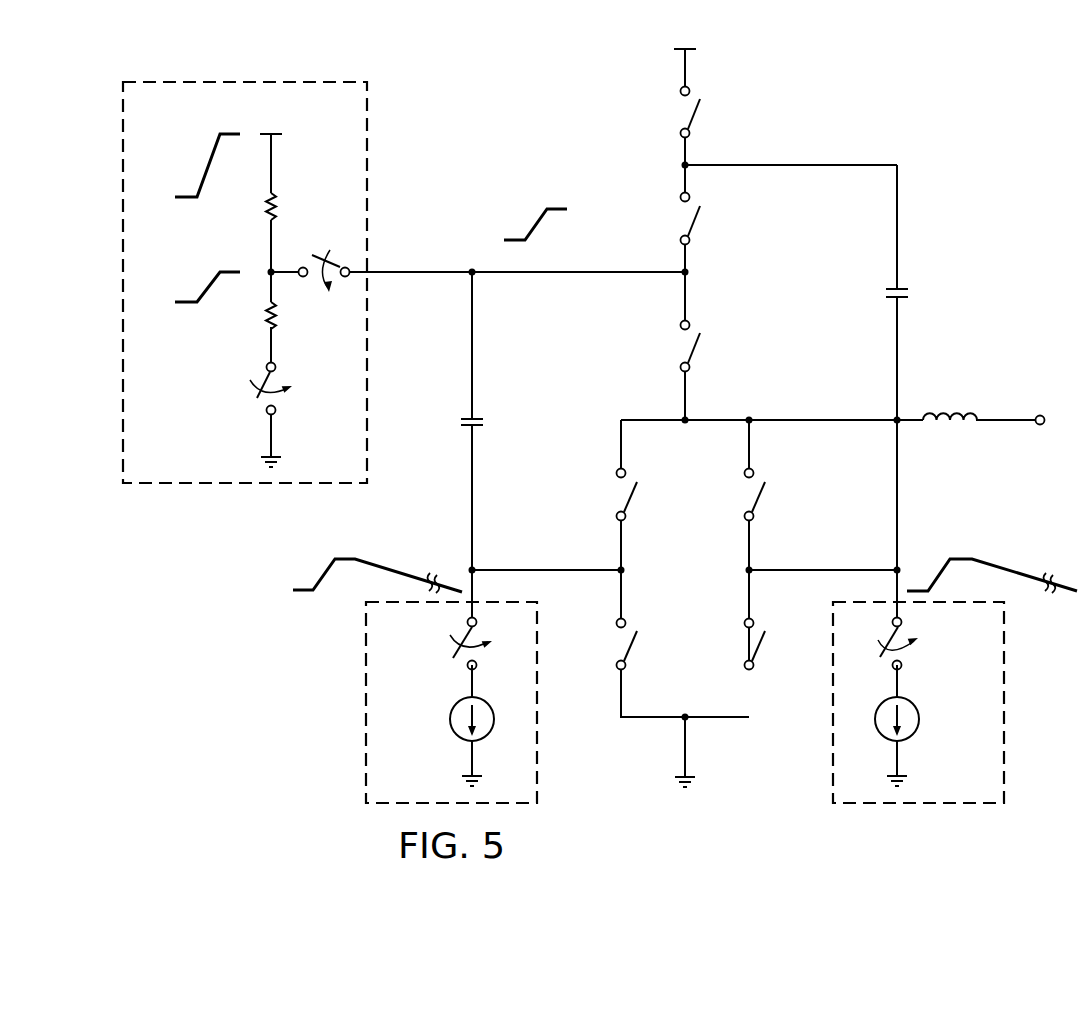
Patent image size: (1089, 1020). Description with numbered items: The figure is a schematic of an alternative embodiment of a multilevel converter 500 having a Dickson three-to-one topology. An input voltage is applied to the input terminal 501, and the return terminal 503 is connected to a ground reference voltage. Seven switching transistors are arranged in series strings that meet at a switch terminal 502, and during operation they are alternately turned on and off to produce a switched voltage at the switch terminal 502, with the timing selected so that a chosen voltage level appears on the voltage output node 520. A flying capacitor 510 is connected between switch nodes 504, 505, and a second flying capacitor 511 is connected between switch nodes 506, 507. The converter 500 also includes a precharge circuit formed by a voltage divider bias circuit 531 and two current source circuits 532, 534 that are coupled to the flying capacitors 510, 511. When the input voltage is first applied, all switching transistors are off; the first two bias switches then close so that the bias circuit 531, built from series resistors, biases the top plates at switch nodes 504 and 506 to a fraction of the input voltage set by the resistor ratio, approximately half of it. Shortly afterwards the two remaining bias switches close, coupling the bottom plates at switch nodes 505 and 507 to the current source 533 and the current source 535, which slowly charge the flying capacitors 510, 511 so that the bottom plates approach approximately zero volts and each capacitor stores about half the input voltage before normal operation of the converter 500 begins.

The multilevel converter 500 is at (426, 56).
The input terminal 501 is at (692, 51).
The switch terminal 502 is at (688, 426).
The return terminal 503 is at (695, 783).
The switch node 504 is at (688, 276).
The switch node 505 is at (617, 573).
The switch node 506 is at (688, 163).
The switch node 507 is at (752, 573).
The flying capacitor 510 is at (460, 422).
The second flying capacitor 511 is at (886, 294).
The voltage output node 520 is at (1010, 426).
The bias circuit 531 is at (233, 494).
The current source circuit 532 is at (356, 713).
The current source 533 is at (450, 720).
The current source circuit 534 is at (1013, 717).
The current source 535 is at (920, 722).